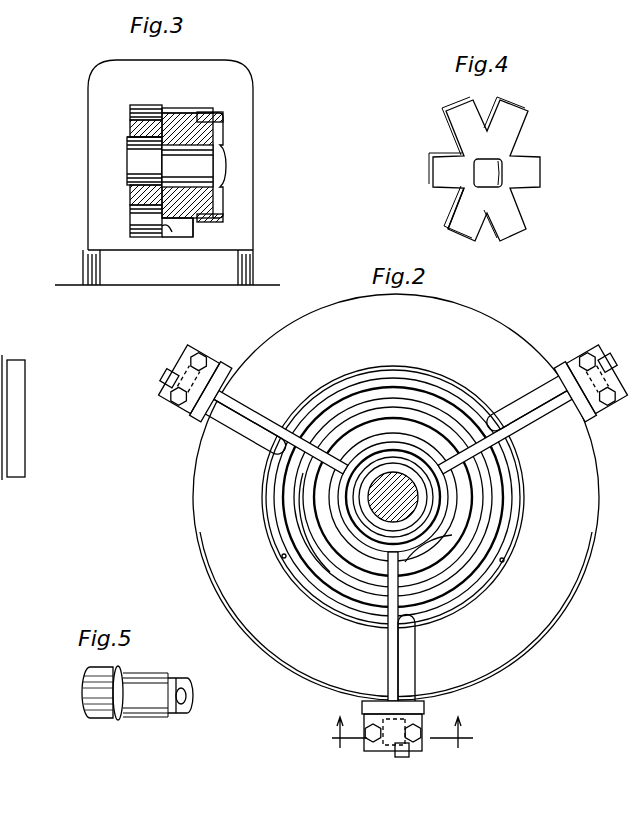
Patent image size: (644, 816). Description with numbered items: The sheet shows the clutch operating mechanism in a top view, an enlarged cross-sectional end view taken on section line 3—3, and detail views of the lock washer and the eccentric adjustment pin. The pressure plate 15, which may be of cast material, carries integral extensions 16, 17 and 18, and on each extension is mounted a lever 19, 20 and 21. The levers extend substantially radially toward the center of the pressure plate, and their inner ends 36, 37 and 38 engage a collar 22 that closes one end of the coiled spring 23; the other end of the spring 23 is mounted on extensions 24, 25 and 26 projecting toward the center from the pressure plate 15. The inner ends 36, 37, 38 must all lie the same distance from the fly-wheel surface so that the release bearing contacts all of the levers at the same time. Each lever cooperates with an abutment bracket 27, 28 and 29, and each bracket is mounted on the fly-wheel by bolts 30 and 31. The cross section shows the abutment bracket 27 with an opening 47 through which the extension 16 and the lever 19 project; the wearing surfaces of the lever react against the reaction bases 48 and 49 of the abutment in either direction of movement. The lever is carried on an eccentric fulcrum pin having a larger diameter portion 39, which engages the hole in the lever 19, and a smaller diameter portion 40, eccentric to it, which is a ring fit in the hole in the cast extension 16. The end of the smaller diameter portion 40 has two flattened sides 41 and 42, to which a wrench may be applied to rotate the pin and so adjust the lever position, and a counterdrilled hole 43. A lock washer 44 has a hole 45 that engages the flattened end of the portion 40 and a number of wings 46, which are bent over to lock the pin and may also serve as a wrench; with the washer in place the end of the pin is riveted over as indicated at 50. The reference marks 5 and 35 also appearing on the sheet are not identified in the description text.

In FIG. 2, the section line 3 is at (399, 733).
In FIG. 2, the fragment 5 is at (0, 348).
In FIG. 2, the pressure plate 15 is at (322, 318).
In FIG. 3, the extension 16 is at (190, 220).
In FIG. 2, the extension 16 is at (407, 659).
In FIG. 2, the extension 17 is at (247, 430).
In FIG. 2, the extension 18 is at (530, 393).
In FIG. 3, the lever 19 is at (130, 212).
In FIG. 2, the lever 19 is at (390, 656).
In FIG. 2, the lever 20 is at (243, 403).
In FIG. 2, the lever 21 is at (523, 428).
In FIG. 2, the collar 22 is at (368, 548).
In FIG. 2, the coiled spring 23 is at (353, 417).
In FIG. 2, the extension 24 is at (282, 560).
In FIG. 2, the extension 25 is at (395, 368).
In FIG. 2, the extension 26 is at (502, 562).
In FIG. 3, the abutment bracket 27 is at (100, 128).
In FIG. 2, the abutment bracket 27 is at (367, 708).
In FIG. 2, the abutment bracket 28 is at (183, 420).
In FIG. 2, the abutment bracket 29 is at (563, 358).
In FIG. 2, the bolt 30 is at (380, 742).
In FIG. 2, the bolt 31 is at (418, 755).
In FIG. 2, the hub 35 is at (365, 497).
In FIG. 2, the inner end of lever 36 is at (405, 562).
In FIG. 2, the inner end of lever 37 is at (327, 481).
In FIG. 2, the inner end of lever 38 is at (458, 482).
In FIG. 3, the larger diameter portion 39 is at (143, 160).
In FIG. 2, the larger diameter portion 39 is at (382, 757).
In FIG. 5, the larger diameter portion 39 is at (110, 718).
In FIG. 3, the smaller diameter portion 40 is at (222, 138).
In FIG. 2, the smaller diameter portion 40 is at (398, 760).
In FIG. 5, the smaller diameter portion 40 is at (150, 717).
In FIG. 5, the flattened side 41 is at (186, 678).
In FIG. 5, the flattened side 42 is at (185, 713).
In FIG. 5, the counterdrilled hole 43 is at (187, 697).
In FIG. 3, the lock washer 44 is at (223, 205).
In FIG. 4, the lock washer 44 is at (507, 157).
In FIG. 2, the lock washer 44 is at (427, 730).
In FIG. 4, the hole 45 is at (474, 166).
In FIG. 3, the wing 46 is at (213, 114).
In FIG. 4, the wing 46 is at (502, 217).
In FIG. 3, the opening 47 is at (185, 108).
In FIG. 3, the reaction base 48 is at (165, 236).
In FIG. 3, the reaction base 49 is at (168, 106).
In FIG. 3, the riveted end 50 is at (222, 177).